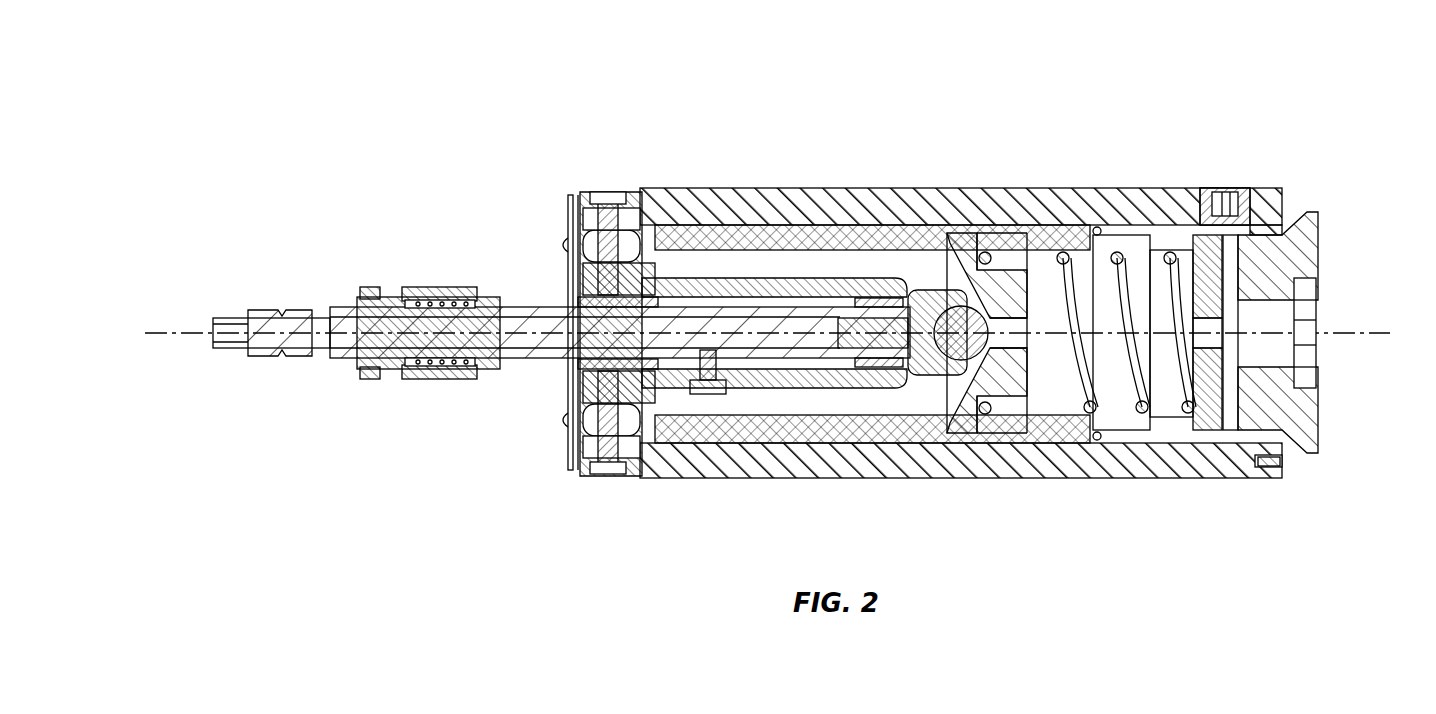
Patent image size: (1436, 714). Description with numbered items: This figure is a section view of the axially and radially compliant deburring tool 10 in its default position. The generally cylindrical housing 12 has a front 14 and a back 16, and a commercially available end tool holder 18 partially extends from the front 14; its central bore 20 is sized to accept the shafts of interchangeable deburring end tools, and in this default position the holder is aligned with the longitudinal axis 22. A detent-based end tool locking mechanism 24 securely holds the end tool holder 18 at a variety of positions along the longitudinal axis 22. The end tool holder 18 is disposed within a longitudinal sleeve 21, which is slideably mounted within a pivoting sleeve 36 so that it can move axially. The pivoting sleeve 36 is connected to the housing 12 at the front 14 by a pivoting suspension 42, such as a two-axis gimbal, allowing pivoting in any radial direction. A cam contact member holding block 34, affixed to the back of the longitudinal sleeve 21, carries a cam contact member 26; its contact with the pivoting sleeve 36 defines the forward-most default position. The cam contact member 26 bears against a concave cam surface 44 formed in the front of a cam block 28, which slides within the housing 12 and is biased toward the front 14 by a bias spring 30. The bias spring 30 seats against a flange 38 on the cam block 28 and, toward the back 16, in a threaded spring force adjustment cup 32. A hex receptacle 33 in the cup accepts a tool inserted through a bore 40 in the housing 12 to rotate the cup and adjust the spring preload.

The axially and radially compliant deburring tool 10 is at (1118, 92).
The housing 12 is at (728, 477).
The front 14 is at (565, 393).
The back 16 is at (1320, 245).
The end tool holder 18 is at (232, 318).
The central bore 20 is at (213, 338).
The longitudinal sleeve 21 is at (547, 305).
The longitudinal axis 22 is at (1350, 333).
The detent-based end tool locking mechanism 24 is at (440, 289).
The cam contact member 26 is at (945, 288).
The cam block 28 is at (990, 365).
The bias spring 30 is at (1058, 258).
The spring force adjustment cup 32 is at (1243, 232).
The hex receptacle 33 is at (1279, 463).
The cam contact member holding block 34 is at (928, 365).
The pivoting sleeve 36 is at (690, 283).
The flange 38 is at (983, 250).
The bore 40 is at (1266, 350).
The pivoting suspension 42 is at (610, 192).
The concave cam surface 44 is at (945, 285).